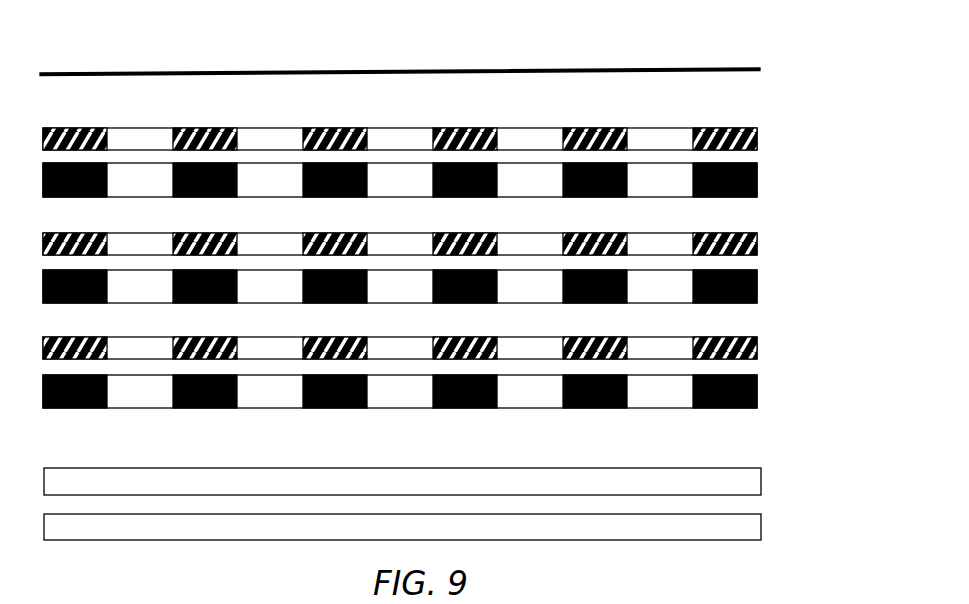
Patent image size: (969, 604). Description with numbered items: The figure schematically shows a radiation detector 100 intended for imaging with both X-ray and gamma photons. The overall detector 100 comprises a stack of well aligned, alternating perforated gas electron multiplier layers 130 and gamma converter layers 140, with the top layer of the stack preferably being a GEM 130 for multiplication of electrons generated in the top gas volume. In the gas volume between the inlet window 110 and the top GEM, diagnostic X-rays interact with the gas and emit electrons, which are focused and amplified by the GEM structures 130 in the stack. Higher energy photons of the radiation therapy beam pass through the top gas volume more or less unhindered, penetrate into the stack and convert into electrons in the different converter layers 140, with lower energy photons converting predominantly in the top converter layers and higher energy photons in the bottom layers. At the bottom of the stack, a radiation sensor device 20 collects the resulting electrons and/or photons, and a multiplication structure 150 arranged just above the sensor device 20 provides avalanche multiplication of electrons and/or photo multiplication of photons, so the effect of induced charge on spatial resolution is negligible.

The detector 100 is at (636, 34).
The inlet window 110 is at (760, 69).
The gas electron multiplier layer 130 is at (757, 139).
The gamma converter layer 140 is at (757, 180).
The multiplication structure 150 is at (761, 482).
The radiation sensor device 20 is at (761, 522).